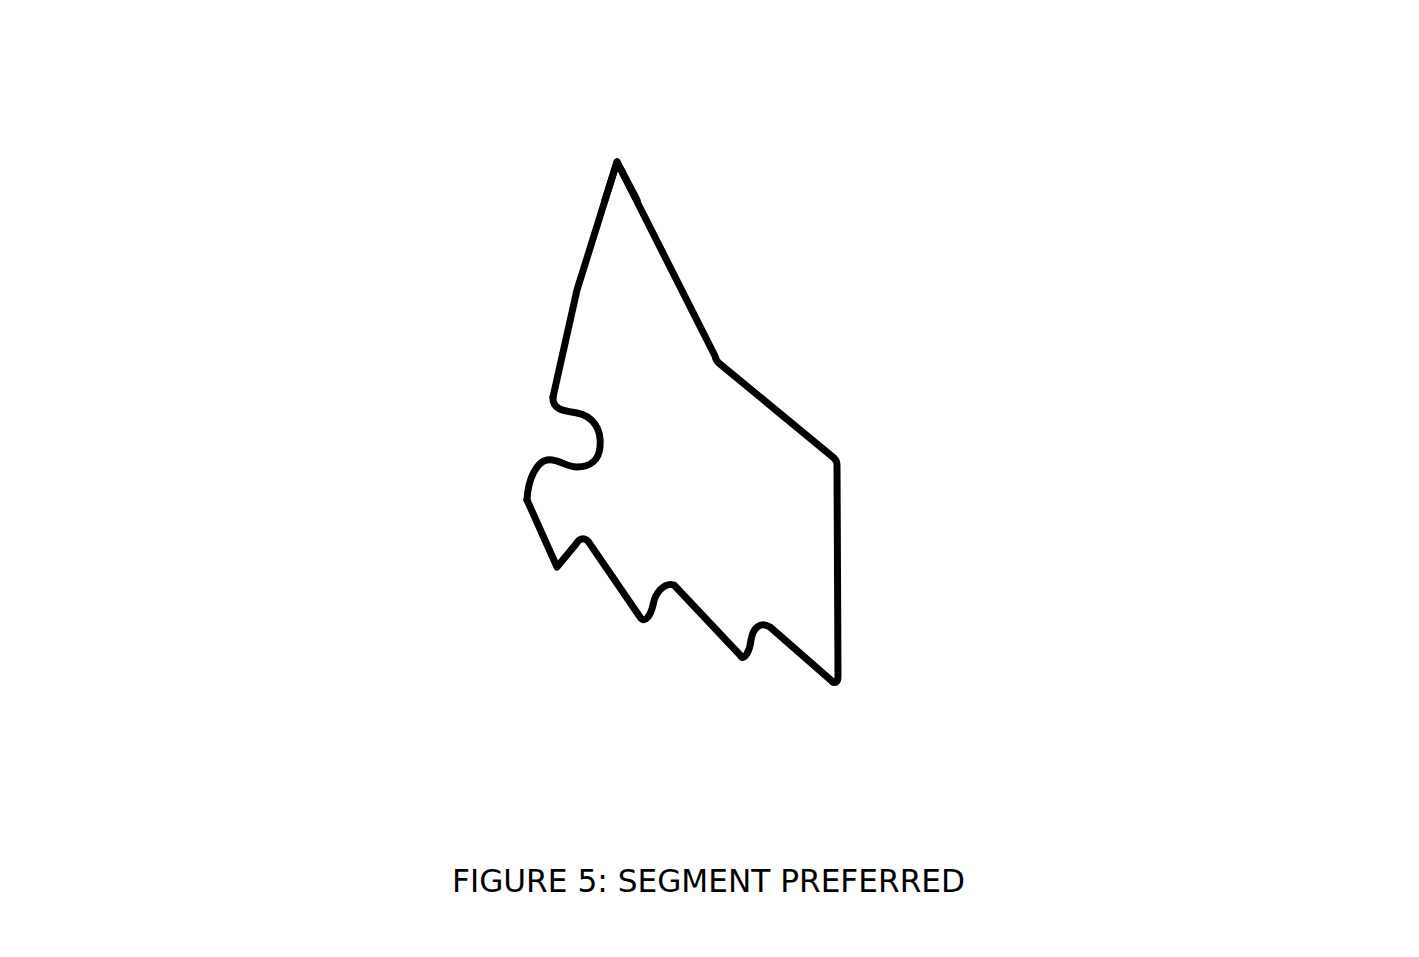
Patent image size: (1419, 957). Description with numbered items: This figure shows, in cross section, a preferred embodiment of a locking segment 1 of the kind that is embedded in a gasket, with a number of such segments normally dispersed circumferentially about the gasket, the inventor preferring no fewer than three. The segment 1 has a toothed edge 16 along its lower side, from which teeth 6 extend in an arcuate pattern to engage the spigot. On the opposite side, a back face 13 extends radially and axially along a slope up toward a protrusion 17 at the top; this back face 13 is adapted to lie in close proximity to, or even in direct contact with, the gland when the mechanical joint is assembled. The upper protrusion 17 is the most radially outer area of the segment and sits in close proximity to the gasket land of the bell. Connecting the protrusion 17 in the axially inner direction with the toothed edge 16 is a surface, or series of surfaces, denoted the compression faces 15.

The locking segment 1 is at (734, 401).
The teeth 6 is at (826, 686).
The back face 13 is at (574, 291).
The compression faces 15 is at (842, 552).
The toothed edge 16 is at (455, 627).
The protrusion 17 is at (622, 157).